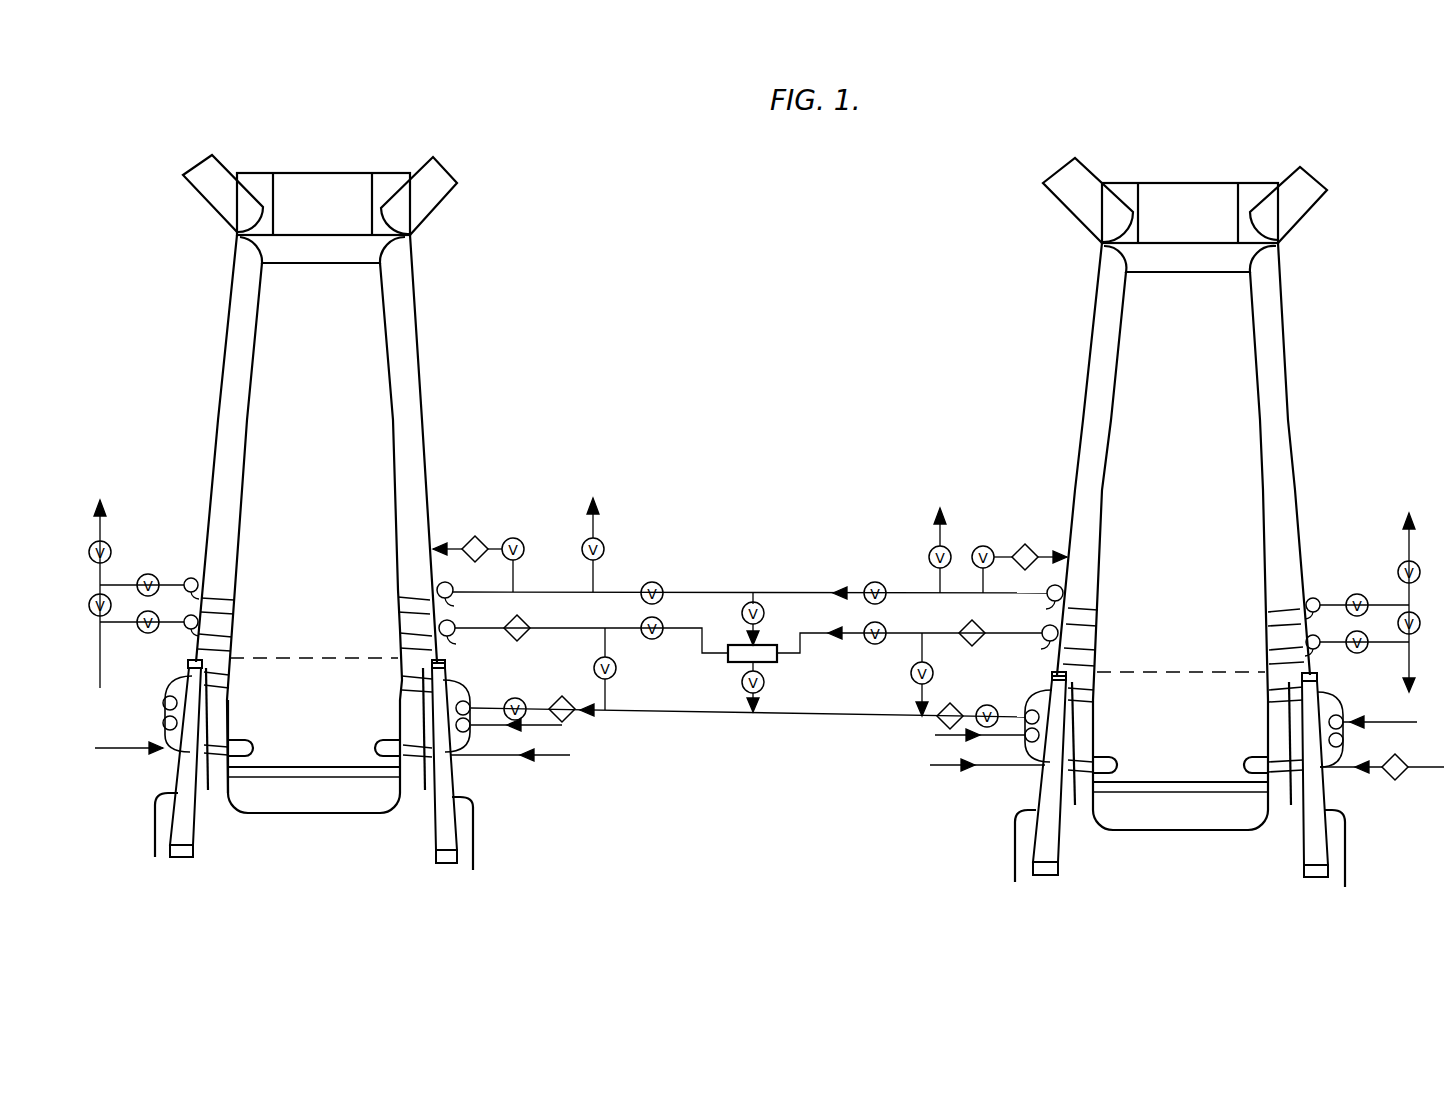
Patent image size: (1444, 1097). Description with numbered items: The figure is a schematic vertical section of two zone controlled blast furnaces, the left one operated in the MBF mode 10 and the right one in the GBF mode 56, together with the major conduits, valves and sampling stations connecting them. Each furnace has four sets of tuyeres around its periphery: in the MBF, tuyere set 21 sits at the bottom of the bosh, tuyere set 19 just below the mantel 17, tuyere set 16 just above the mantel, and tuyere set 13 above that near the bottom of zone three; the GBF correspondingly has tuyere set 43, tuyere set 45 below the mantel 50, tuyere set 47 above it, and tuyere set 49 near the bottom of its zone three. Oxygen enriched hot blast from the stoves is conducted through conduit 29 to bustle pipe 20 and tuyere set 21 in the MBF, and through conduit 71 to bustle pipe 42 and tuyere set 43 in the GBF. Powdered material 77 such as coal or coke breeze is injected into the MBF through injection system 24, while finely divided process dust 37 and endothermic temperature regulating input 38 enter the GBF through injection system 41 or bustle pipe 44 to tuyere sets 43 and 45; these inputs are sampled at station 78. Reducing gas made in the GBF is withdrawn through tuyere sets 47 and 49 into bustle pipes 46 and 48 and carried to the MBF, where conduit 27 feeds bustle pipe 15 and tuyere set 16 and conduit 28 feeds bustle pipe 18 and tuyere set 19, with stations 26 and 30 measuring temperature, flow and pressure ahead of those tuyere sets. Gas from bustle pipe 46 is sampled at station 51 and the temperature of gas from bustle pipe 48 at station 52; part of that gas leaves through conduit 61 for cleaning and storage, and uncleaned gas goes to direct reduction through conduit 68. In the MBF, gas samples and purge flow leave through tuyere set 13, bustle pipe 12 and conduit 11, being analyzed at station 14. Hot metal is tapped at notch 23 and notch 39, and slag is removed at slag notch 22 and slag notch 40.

The MBF mode blast furnace 10 is at (420, 381).
The conduit 11 is at (103, 531).
The bustle pipe 12 is at (452, 589).
The tuyere set 4 (MBF) 13 is at (399, 604).
The sample station 14 is at (470, 538).
The bustle pipe 15 is at (455, 633).
The tuyere set 3 (MBF) 16 is at (401, 641).
The mantel (MBF) 17 is at (447, 664).
The bustle pipe 18 is at (470, 709).
The tuyere set 2 (MBF) 19 is at (403, 689).
The bustle pipe 20 is at (472, 734).
The tuyere set 1 (MBF) 21 is at (396, 745).
The slag notch (MBF) 22 is at (425, 790).
The notch (MBF) 23 is at (217, 796).
The injection system 24 is at (167, 752).
The sample station 26 is at (528, 628).
The conduit 27 is at (620, 628).
The conduit 28 is at (648, 711).
The conduit 29 is at (555, 726).
The sample station 30 is at (552, 698).
The process dust 37 is at (115, 747).
The endothermic temperature regulating input 38 is at (1382, 737).
The notch (GBF) 39 is at (1078, 810).
The slag notch (GBF) 40 is at (1278, 801).
The injection system 41 is at (1040, 769).
The bustle pipe 42 is at (1025, 739).
The tuyere set 1 (GBF) 43 is at (1105, 757).
The bustle pipe 44 is at (1028, 710).
The tuyere set 2 (GBF) 45 is at (1090, 691).
The bustle pipe 46 is at (1044, 636).
The tuyere set 3 (GBF) 47 is at (1092, 653).
The bustle pipe 48 is at (1047, 596).
The tuyere set 4 (GBF) 49 is at (1092, 620).
The mantel (GBF) 50 is at (1050, 677).
The sample station 51 is at (962, 628).
The sample station 52 is at (1022, 545).
The GBF mode blast furnace 56 is at (1090, 389).
The conduit 61 is at (1408, 553).
The conduit 68 is at (1408, 661).
The conduit 71 is at (962, 735).
The powdered material 77 is at (972, 765).
The sample station 78 is at (1392, 781).